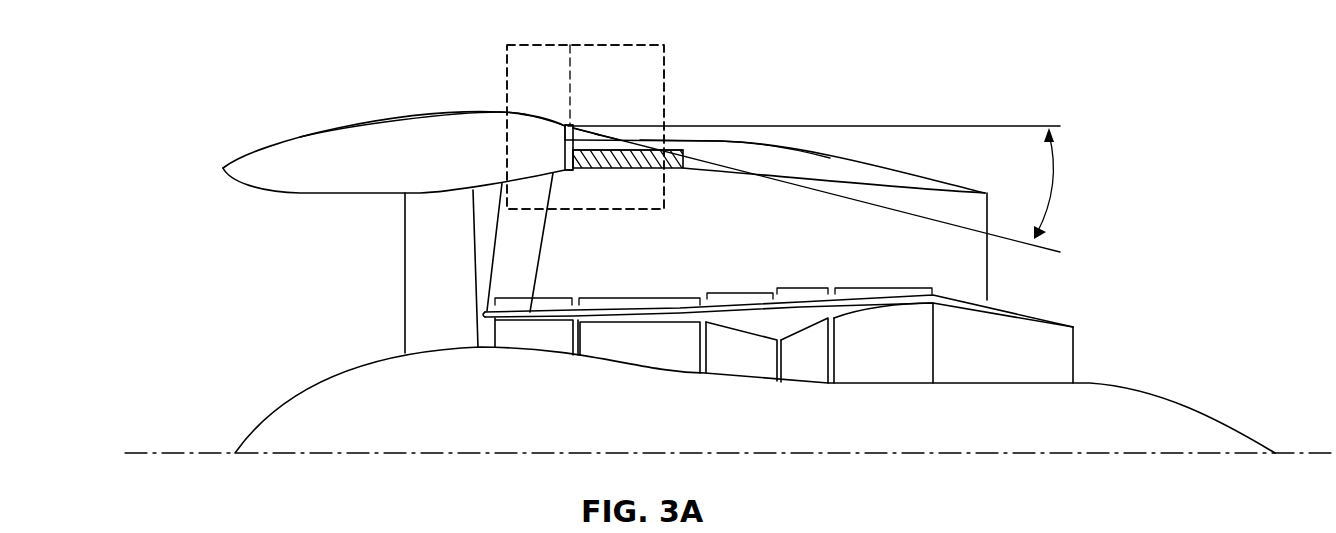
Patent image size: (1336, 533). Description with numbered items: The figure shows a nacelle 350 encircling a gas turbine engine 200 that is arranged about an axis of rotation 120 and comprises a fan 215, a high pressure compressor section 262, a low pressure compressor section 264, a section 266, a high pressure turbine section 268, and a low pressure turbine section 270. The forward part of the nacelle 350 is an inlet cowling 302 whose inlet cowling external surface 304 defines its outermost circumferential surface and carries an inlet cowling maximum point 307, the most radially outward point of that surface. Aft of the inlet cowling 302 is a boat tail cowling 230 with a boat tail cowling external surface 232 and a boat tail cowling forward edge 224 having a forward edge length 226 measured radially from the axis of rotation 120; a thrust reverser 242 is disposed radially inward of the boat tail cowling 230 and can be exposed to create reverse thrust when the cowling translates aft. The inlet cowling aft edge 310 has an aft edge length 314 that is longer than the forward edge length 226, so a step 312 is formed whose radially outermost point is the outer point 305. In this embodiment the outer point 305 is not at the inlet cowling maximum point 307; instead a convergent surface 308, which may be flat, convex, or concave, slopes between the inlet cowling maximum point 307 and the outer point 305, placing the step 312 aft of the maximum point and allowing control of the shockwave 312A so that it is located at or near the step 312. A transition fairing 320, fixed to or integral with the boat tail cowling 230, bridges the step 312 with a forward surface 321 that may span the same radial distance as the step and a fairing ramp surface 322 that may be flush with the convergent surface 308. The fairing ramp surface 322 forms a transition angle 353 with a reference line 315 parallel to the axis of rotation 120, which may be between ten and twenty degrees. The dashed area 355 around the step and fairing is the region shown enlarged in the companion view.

The axis of rotation 120 is at (475, 453).
The gas turbine engine 200 is at (258, 361).
The fan 215 is at (421, 270).
The boat tail cowling forward edge 224 is at (563, 162).
The forward edge length 226 is at (556, 176).
The boat tail cowling 230 is at (788, 156).
The boat tail cowling external surface 232 is at (722, 139).
The thrust reverser 242 is at (667, 166).
The high pressure compressor section 262 is at (552, 296).
The low pressure compressor section 264 is at (647, 296).
The third panel 266 is at (744, 292).
The high pressure turbine section 268 is at (806, 287).
The low pressure turbine section 270 is at (877, 287).
The inlet cowling 302 is at (282, 152).
The inlet cowling external surface 304 is at (383, 120).
The outer point 305 is at (567, 127).
The inlet cowling maximum point 307 is at (512, 112).
The convergent surface 308 is at (528, 115).
The inlet cowling aft edge 310 is at (585, 131).
The step 312 is at (563, 133).
The shockwave 312A is at (585, 127).
The aft edge length 314 is at (583, 151).
The reference line 315 is at (892, 120).
The transition fairing 320 is at (583, 133).
The forward surface 321 is at (565, 127).
The fairing ramp surface 322 is at (600, 133).
The nacelle 350 is at (336, 113).
The transition angle 353 is at (1050, 197).
The area 355 is at (665, 72).